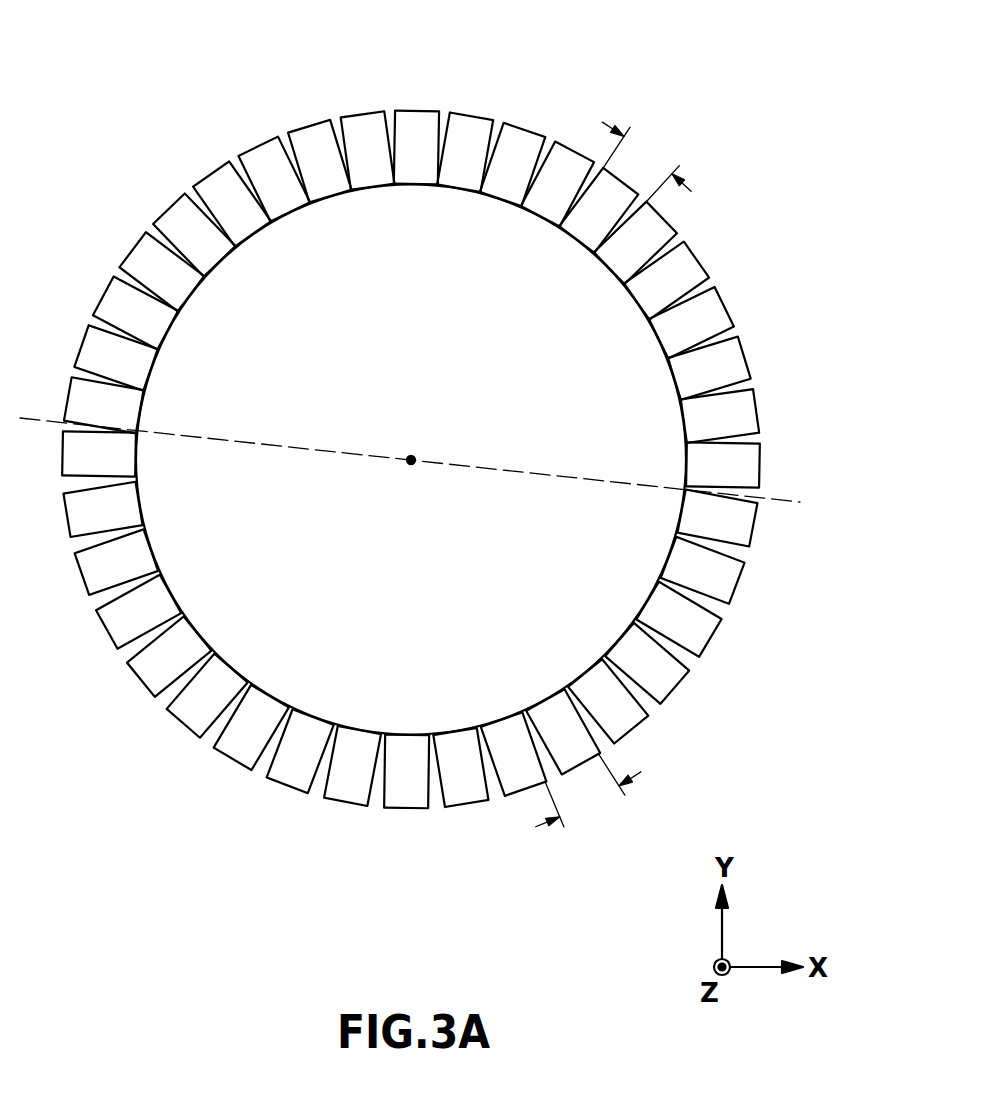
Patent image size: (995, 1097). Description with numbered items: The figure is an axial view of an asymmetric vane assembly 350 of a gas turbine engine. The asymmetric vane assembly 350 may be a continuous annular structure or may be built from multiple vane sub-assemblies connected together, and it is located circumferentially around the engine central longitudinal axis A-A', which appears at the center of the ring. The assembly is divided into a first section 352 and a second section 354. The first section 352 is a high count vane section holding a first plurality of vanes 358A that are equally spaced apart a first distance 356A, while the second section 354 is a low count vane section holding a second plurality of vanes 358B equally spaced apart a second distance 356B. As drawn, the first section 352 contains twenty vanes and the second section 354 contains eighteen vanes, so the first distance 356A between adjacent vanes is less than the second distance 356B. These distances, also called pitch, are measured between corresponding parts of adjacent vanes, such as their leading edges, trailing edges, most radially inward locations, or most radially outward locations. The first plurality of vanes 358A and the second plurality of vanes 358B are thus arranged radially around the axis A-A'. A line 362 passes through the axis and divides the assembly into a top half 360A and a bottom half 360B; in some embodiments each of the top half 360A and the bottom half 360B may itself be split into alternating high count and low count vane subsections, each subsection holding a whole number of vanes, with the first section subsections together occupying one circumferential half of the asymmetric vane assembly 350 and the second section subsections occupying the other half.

The asymmetric vane assembly 350 is at (125, 58).
The first section 352 is at (780, 291).
The second section 354 is at (702, 731).
The first distance 356A is at (657, 147).
The second distance 356B is at (593, 818).
The first plurality of vanes 358A is at (522, 130).
The second plurality of vanes 358B is at (345, 802).
The top half 360A is at (607, 308).
The bottom half 360B is at (588, 578).
The line 362 is at (783, 497).